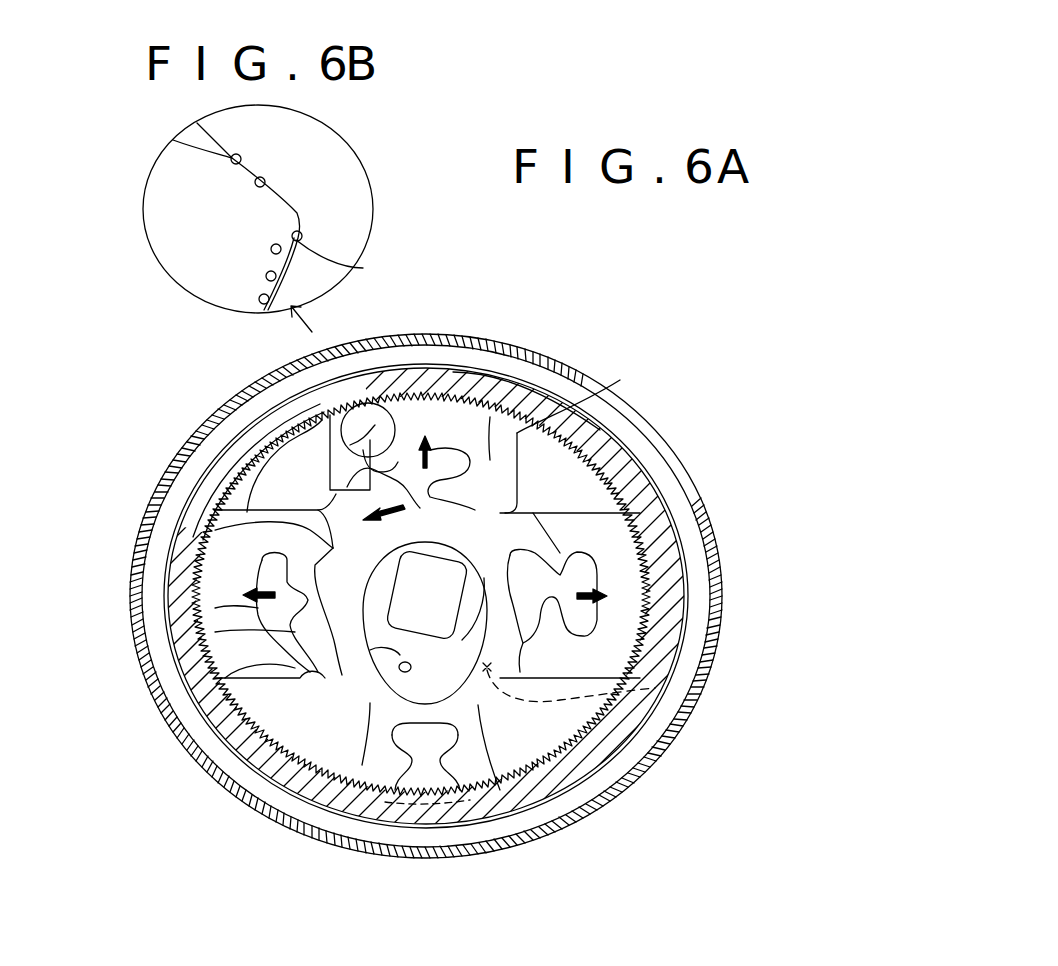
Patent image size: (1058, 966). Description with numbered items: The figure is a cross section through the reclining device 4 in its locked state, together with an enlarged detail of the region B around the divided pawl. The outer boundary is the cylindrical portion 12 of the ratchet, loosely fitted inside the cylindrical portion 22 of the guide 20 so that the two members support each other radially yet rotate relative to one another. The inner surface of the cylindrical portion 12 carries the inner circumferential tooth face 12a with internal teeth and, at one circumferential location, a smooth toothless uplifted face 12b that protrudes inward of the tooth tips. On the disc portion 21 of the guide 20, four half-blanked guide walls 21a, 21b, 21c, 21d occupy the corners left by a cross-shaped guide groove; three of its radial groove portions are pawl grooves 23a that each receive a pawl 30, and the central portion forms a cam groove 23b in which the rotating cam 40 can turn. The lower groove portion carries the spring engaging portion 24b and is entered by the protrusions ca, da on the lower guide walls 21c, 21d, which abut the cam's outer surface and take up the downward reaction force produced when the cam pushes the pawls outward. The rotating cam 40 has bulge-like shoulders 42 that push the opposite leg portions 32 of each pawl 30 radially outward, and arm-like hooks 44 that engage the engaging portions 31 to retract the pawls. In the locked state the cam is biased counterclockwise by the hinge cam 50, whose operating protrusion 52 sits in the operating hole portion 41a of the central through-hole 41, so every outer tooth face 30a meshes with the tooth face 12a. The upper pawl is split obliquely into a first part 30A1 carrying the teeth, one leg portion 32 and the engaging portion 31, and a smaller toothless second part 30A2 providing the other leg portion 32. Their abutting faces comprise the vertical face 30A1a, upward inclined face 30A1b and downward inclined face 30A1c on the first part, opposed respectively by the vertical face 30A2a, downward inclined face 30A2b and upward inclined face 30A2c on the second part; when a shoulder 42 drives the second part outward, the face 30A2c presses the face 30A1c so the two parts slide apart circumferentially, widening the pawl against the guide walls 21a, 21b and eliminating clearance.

In FIG. 6A, the reclining device 4 is at (614, 259).
In FIG. 6A, the cylindrical portion 12 is at (637, 437).
In FIG. 6A, the inner circumferential tooth face 12a is at (680, 522).
In FIG. 6A, the uplifted face 12b is at (620, 768).
In FIG. 6A, the guide 20 is at (640, 438).
In FIG. 6A, the disc portion 21 is at (529, 596).
In FIG. 6A, the guide wall 21a is at (590, 415).
In FIG. 6A, the guide wall 21b is at (205, 445).
In FIG. 6A, the guide wall 21c is at (245, 798).
In FIG. 6A, the guide wall 21d is at (643, 740).
In FIG. 6A, the cylindrical portion 22 is at (537, 376).
In FIG. 6A, the pawl groove 23a is at (412, 458).
In FIG. 6A, the cam groove 23b is at (660, 695).
In FIG. 6A, the spring engaging portion 24b is at (428, 767).
In FIG. 6A, the pawl 30 is at (546, 378).
In FIG. 6A, the outer tooth face 30a is at (358, 403).
In FIG. 6B, the first part 30A1 is at (352, 178).
In FIG. 6A, the first part 30A1 is at (475, 370).
In FIG. 6B, the second part 30A2 is at (150, 216).
In FIG. 6A, the second part 30A2 is at (287, 477).
In FIG. 6B, the vertical face 30A1a is at (270, 300).
In FIG. 6B, the upward inclined face 30A1b is at (302, 238).
In FIG. 6B, the downward inclined face 30A1c is at (275, 168).
In FIG. 6B, the vertical face 30A2a is at (266, 277).
In FIG. 6B, the downward inclined face 30A2b is at (271, 249).
In FIG. 6B, the upward inclined face 30A2c is at (232, 163).
In FIG. 6A, the engaging portion 31 is at (517, 370).
In FIG. 6A, the leg portion 32 is at (590, 378).
In FIG. 6A, the rotating cam 40 is at (300, 803).
In FIG. 6A, the through-hole 41 is at (486, 576).
In FIG. 6A, the operating hole portion 41a is at (406, 672).
In FIG. 6A, the shoulder 42 is at (330, 508).
In FIG. 6A, the hook 44 is at (428, 505).
In FIG. 6A, the hinge cam 50 is at (385, 566).
In FIG. 6A, the operating protrusion 52 is at (370, 655).
In FIG. 6A, the detail region B is at (343, 464).
In FIG. 6A, the protrusion ca is at (356, 792).
In FIG. 6A, the protrusion da is at (510, 765).